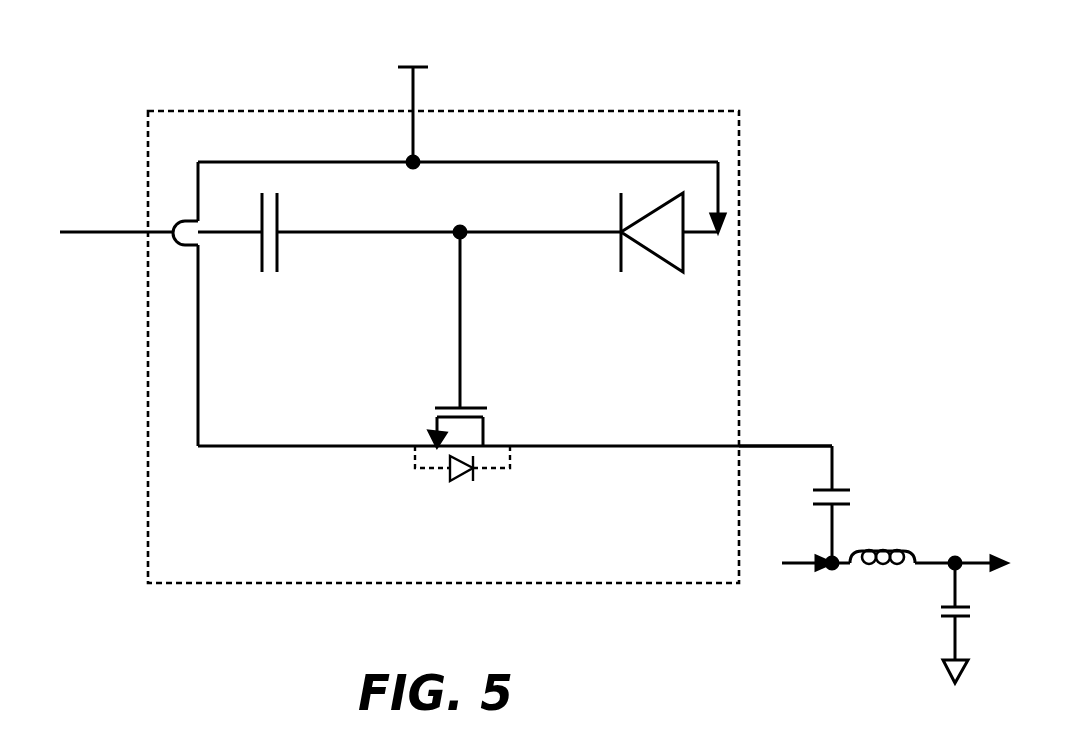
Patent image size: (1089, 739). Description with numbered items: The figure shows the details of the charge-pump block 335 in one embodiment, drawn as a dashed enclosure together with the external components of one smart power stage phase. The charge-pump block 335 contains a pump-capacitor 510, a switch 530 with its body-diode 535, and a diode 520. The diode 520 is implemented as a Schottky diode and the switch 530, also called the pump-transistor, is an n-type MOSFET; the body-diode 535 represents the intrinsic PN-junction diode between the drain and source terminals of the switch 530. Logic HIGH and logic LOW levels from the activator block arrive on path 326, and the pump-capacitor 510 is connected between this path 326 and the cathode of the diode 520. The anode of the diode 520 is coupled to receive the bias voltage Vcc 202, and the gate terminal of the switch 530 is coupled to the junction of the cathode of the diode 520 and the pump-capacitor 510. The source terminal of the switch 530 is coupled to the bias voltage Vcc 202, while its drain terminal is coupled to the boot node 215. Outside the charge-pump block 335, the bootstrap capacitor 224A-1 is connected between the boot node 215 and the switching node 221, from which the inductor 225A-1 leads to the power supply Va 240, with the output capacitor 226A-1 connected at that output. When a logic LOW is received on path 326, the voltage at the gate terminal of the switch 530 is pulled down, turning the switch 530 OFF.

The charge-pump block 335 is at (733, 572).
The bias voltage Vcc 202 is at (416, 101).
The path 326 is at (102, 229).
The pump-capacitor 510 is at (268, 277).
The diode 520 is at (660, 273).
The switch 530 is at (435, 436).
The body-diode 535 is at (468, 474).
The boot node BOOTA-1 215 is at (805, 445).
The bootstrap capacitor 224A-1 is at (849, 489).
The node SWA-1 221 is at (829, 568).
The inductor 225A-1 is at (925, 520).
The power supply Va 240 is at (1002, 561).
The output capacitor 226A-1 is at (940, 618).